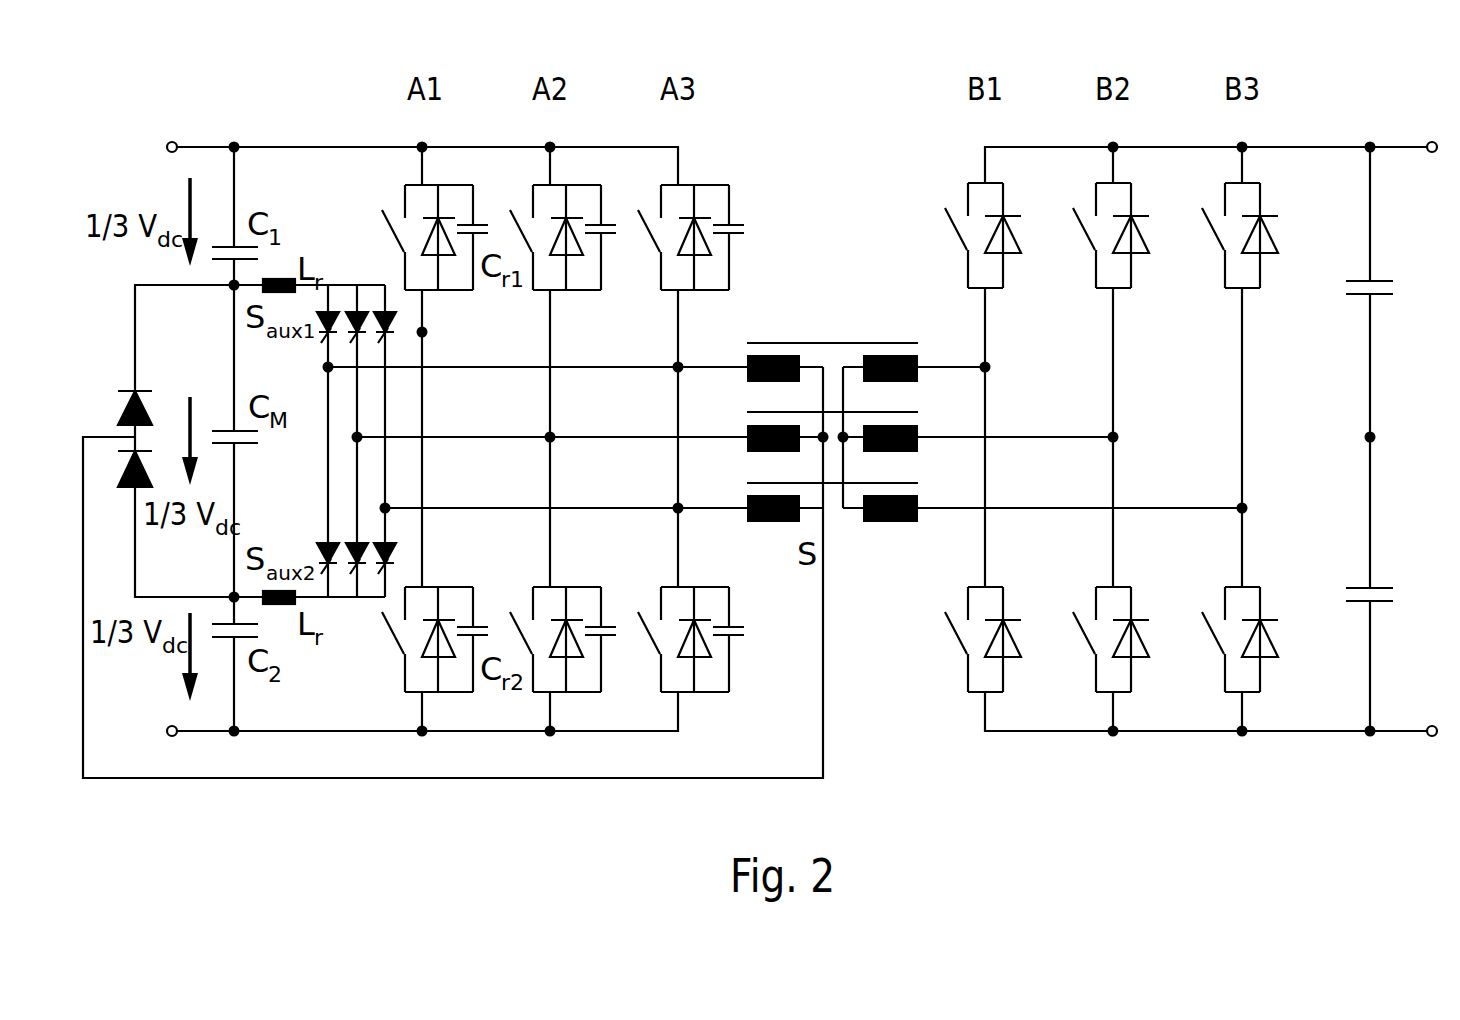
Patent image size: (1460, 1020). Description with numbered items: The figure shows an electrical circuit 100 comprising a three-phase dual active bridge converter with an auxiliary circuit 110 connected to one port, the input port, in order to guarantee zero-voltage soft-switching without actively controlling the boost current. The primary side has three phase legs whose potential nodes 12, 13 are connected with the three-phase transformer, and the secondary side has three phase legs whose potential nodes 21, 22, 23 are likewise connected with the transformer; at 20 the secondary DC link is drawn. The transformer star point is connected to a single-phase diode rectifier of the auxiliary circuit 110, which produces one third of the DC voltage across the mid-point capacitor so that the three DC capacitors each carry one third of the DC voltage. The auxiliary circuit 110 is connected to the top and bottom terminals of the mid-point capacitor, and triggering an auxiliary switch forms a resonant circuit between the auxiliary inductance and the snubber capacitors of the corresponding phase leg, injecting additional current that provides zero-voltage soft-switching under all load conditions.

The electrical circuit 100 is at (212, 116).
The auxiliary circuit 110 is at (446, 788).
The potential node 12 is at (548, 437).
The potential node 13 is at (676, 508).
The output DC link midpoint 20 is at (1374, 433).
The potential node 21 is at (990, 366).
The potential node 22 is at (1118, 435).
The potential node 23 is at (1248, 506).